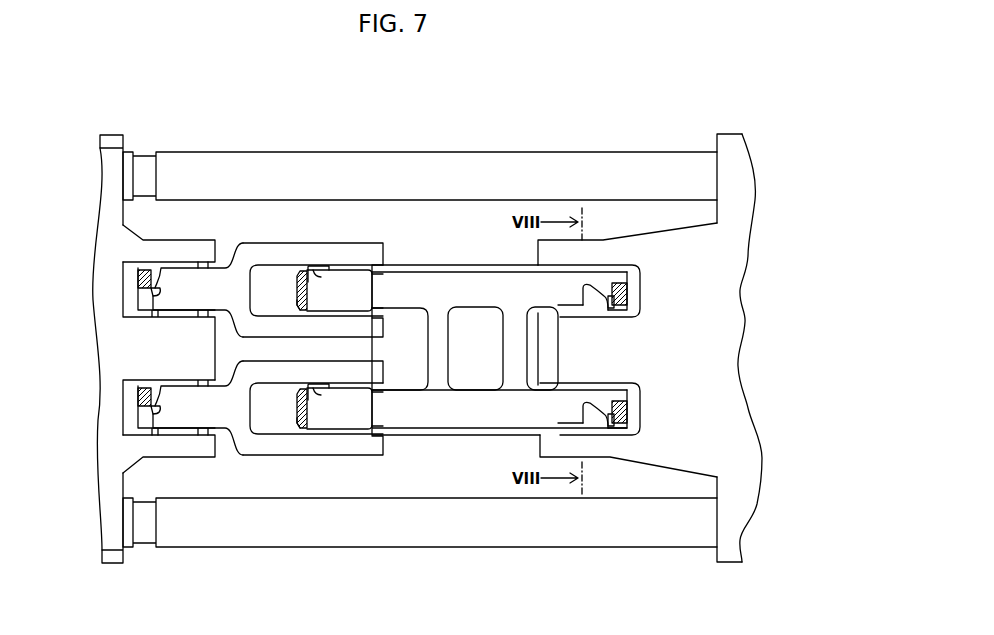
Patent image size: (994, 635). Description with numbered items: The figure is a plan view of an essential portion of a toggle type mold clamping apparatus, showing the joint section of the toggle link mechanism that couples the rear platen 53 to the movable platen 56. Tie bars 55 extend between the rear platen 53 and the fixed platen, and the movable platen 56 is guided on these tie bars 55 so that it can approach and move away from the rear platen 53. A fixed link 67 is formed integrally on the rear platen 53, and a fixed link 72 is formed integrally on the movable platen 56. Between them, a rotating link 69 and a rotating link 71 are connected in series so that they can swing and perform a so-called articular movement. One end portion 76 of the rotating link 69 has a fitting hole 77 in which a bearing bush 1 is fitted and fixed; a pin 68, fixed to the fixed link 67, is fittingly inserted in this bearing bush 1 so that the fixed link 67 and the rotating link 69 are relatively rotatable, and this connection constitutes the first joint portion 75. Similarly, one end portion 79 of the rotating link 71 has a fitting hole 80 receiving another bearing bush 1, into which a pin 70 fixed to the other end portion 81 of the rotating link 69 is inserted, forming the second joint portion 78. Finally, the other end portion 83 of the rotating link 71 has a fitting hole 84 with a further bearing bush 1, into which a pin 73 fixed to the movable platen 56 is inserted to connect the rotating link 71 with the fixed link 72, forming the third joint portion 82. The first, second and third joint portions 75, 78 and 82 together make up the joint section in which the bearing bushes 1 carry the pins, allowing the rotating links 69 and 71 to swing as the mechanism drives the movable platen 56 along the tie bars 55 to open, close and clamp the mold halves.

The bearing bush 1 is at (138, 272).
The rear platen 53 is at (103, 282).
The tie bars 55 is at (556, 170).
The movable platen 56 is at (724, 343).
The fixed link 67 is at (173, 255).
The pin 68 is at (172, 430).
The rotating link 69 is at (280, 255).
The pin 70 is at (323, 270).
The rotating link 71 is at (477, 290).
The fixed link 72 is at (605, 250).
The pin 73 is at (595, 306).
The first joint portion 75 is at (204, 472).
The one end portion 76 is at (203, 283).
The fitting hole 77 is at (153, 292).
The second joint portion 78 is at (367, 468).
The one end portion 79 is at (352, 283).
The fitting hole 80 is at (298, 285).
The other end portion 81 is at (372, 250).
The third joint portion 82 is at (597, 242).
The other end portion 83 is at (617, 270).
The fitting hole 84 is at (628, 306).